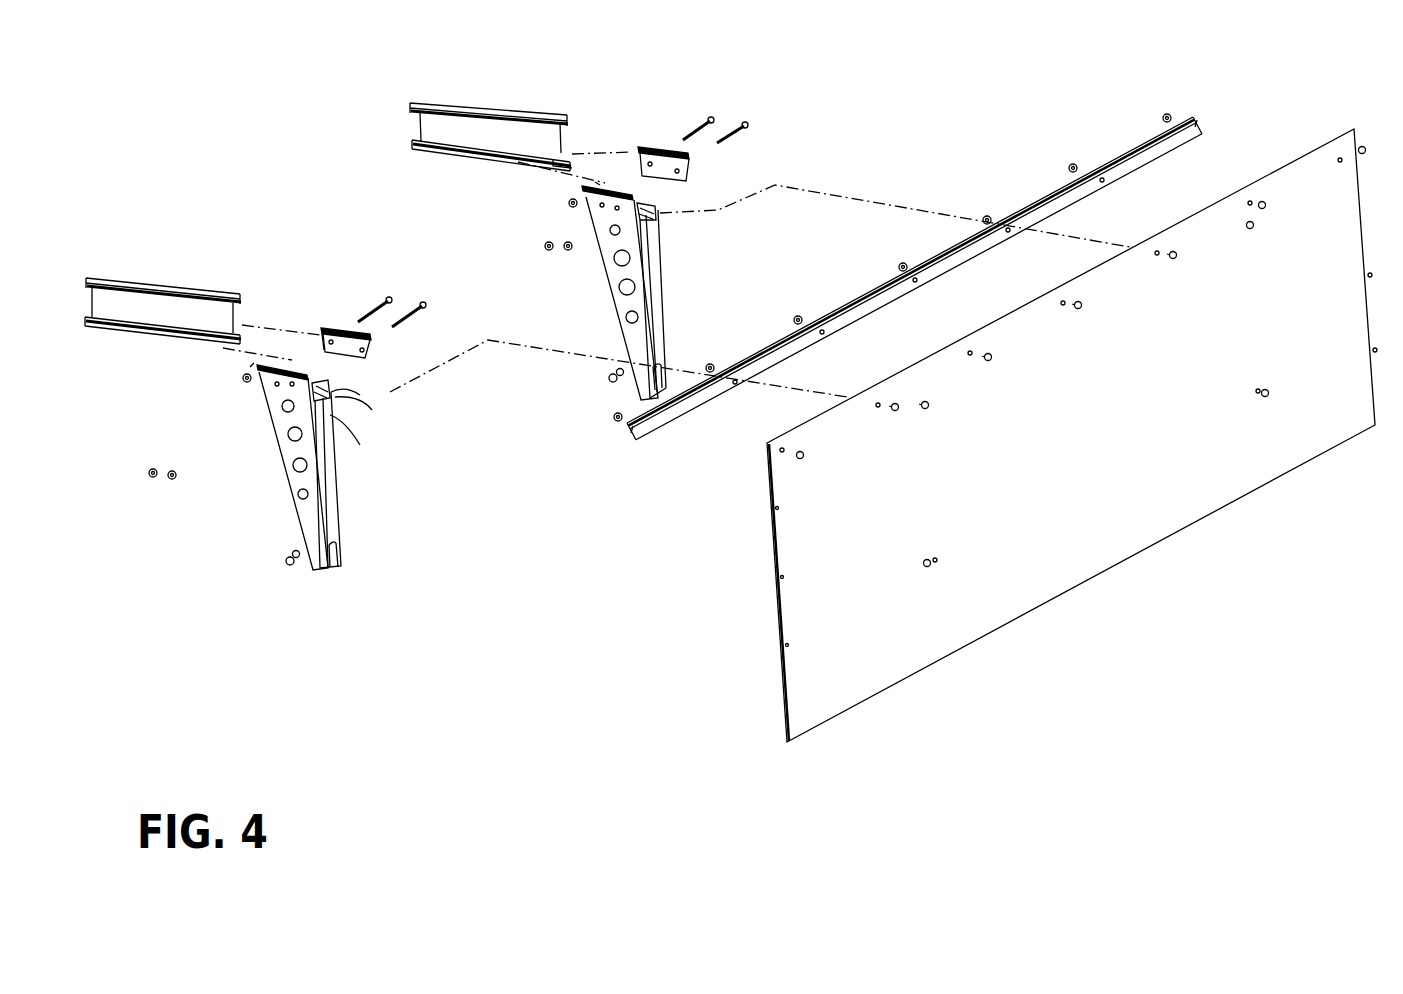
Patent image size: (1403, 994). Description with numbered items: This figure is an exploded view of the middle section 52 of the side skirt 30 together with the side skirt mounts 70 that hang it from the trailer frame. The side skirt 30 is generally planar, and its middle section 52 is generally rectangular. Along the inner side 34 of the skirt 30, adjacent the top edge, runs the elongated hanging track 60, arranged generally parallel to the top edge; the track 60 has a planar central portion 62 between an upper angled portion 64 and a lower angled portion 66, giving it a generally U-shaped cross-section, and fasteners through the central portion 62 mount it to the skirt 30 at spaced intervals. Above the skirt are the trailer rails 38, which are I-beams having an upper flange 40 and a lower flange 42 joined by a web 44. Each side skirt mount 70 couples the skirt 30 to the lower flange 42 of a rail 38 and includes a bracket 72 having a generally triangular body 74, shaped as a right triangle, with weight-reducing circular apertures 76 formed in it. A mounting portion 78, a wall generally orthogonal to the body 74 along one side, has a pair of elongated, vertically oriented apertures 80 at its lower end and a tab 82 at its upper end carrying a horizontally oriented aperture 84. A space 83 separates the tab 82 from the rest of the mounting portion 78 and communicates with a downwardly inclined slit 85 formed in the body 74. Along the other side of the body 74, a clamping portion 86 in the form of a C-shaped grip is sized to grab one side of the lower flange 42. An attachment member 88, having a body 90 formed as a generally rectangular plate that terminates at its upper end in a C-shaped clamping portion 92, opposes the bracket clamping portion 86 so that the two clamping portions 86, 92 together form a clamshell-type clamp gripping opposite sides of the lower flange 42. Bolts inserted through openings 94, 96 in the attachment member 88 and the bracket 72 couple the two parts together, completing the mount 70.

The side skirt 30 is at (1072, 435).
The inner side 34 is at (1275, 432).
The rails 38 is at (328, 217).
The upper flange 40 is at (184, 288).
The lower flange 42 is at (187, 338).
The web 44 is at (150, 310).
The middle section 52 is at (1143, 502).
The hanging track 60 is at (944, 251).
The planar central portion 62 is at (1197, 132).
The upper angled portion 64 is at (1167, 128).
The lower angled portion 66 is at (1180, 148).
The side skirt mount 70 is at (268, 298).
The bracket 72 is at (300, 517).
The body 74 is at (290, 450).
The circular apertures 76 is at (292, 385).
The mounting portion 78 is at (327, 490).
The elongated apertures 80 is at (330, 570).
The tab 82 is at (340, 390).
The space 83 is at (330, 388).
The horizontally oriented aperture 84 is at (333, 400).
The slit 85 is at (335, 430).
The clamping portion 86 is at (252, 366).
The attachment member 88 is at (521, 248).
The body 90 is at (344, 330).
The clamping portion 92 is at (334, 328).
The openings 94 is at (323, 330).
The openings 96 is at (277, 385).